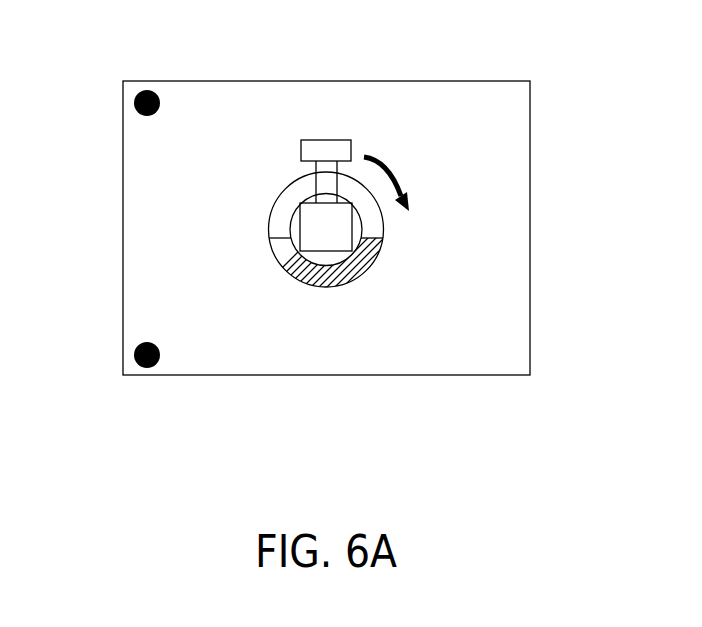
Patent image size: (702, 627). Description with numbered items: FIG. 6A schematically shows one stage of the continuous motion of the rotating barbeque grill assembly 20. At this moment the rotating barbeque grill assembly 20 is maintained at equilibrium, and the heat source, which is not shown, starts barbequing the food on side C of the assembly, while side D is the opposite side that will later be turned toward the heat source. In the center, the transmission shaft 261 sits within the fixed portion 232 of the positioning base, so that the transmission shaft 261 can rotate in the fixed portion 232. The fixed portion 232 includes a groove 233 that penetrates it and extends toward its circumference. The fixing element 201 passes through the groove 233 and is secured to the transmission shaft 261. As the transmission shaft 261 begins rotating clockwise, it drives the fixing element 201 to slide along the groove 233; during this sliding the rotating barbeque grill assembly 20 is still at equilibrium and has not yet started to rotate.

The rotating barbeque grill assembly 20 is at (511, 100).
The fixing element 201 is at (329, 148).
The groove 233 is at (282, 215).
The fixed portion 232 is at (296, 265).
The transmission shaft 261 is at (325, 246).
The side D is at (135, 101).
The side C is at (136, 353).